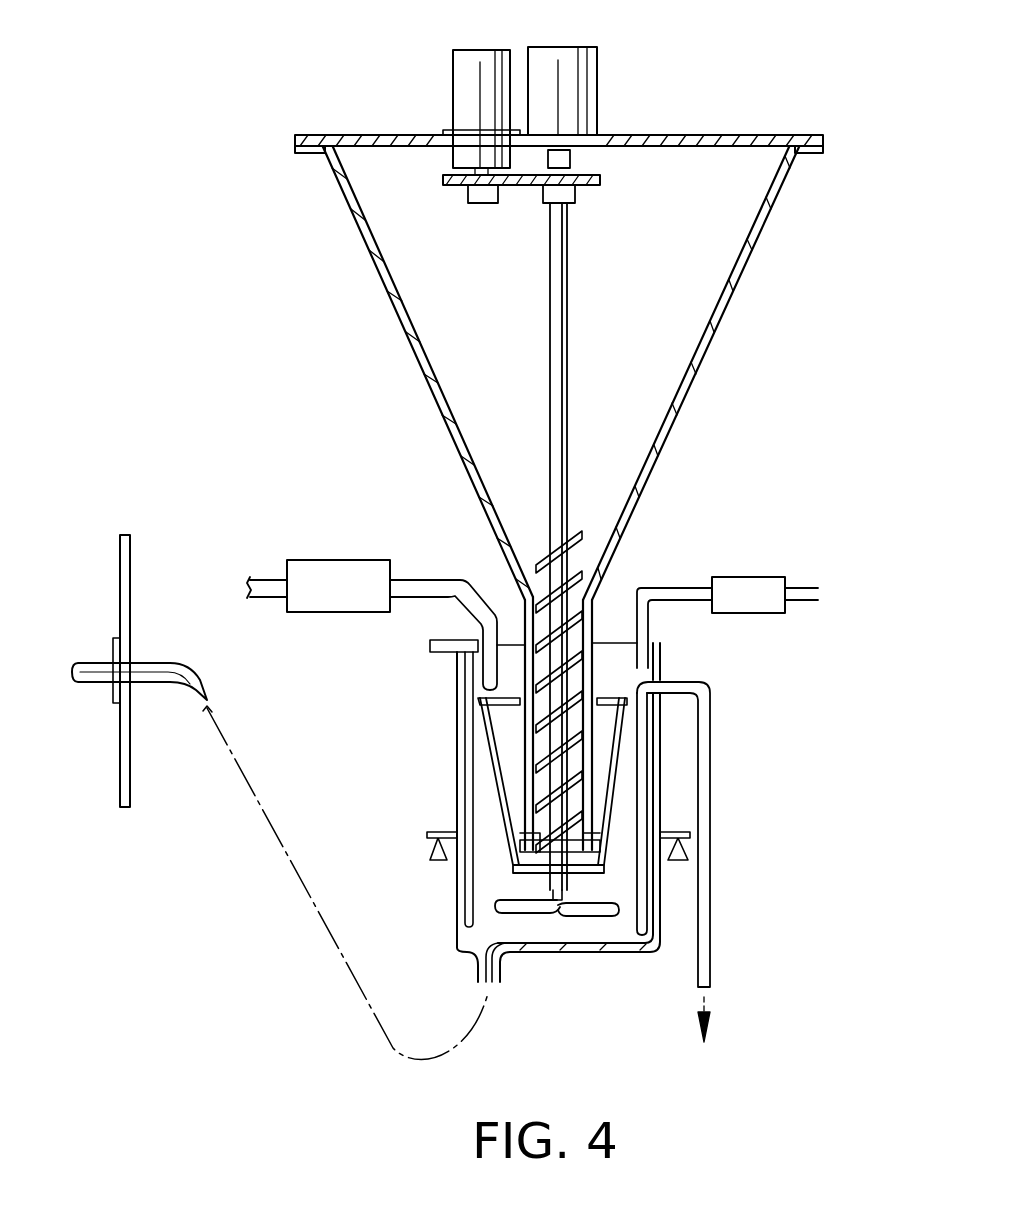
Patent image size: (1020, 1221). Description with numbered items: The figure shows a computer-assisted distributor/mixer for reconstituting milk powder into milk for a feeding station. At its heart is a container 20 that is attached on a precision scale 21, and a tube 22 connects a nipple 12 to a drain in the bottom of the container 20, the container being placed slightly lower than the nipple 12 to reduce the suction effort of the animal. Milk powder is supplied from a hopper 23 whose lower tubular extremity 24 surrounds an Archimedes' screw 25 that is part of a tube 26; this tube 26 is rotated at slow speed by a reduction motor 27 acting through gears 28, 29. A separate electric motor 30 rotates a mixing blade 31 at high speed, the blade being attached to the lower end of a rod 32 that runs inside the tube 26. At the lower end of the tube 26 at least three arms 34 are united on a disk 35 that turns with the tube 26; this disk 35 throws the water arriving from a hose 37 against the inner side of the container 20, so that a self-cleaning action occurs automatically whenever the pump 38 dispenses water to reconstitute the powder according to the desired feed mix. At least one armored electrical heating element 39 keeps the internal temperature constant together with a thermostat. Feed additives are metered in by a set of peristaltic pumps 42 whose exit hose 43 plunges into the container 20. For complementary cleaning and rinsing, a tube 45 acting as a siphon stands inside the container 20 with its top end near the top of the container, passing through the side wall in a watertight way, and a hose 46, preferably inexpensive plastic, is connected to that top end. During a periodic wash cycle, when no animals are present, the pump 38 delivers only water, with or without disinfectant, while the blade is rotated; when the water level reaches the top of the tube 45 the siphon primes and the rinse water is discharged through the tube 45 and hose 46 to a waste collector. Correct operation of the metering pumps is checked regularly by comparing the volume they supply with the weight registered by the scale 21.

The nipple 12 is at (88, 668).
The tube 22 is at (172, 675).
The container 20 is at (662, 755).
The precision scale 21 is at (682, 853).
The hopper 23 is at (733, 300).
The lower tubular extremity 24 is at (600, 727).
The Archimedes' screw 25 is at (588, 665).
The tube 26 is at (562, 396).
The reduction motor 27 is at (467, 86).
The gear 28 is at (445, 181).
The gear 29 is at (538, 187).
The electric motor 30 is at (577, 83).
The mixing blade 31 is at (590, 916).
The rod 32 is at (567, 893).
The arms 34 is at (615, 785).
The disk 35 is at (497, 705).
The hose 37 is at (450, 590).
The pump 38 is at (300, 562).
The armored electrical heating element 39 is at (468, 768).
The peristaltic pumps 42 is at (760, 583).
The exit hose 43 is at (640, 618).
The tube 45 is at (642, 922).
The hose 46 is at (702, 967).